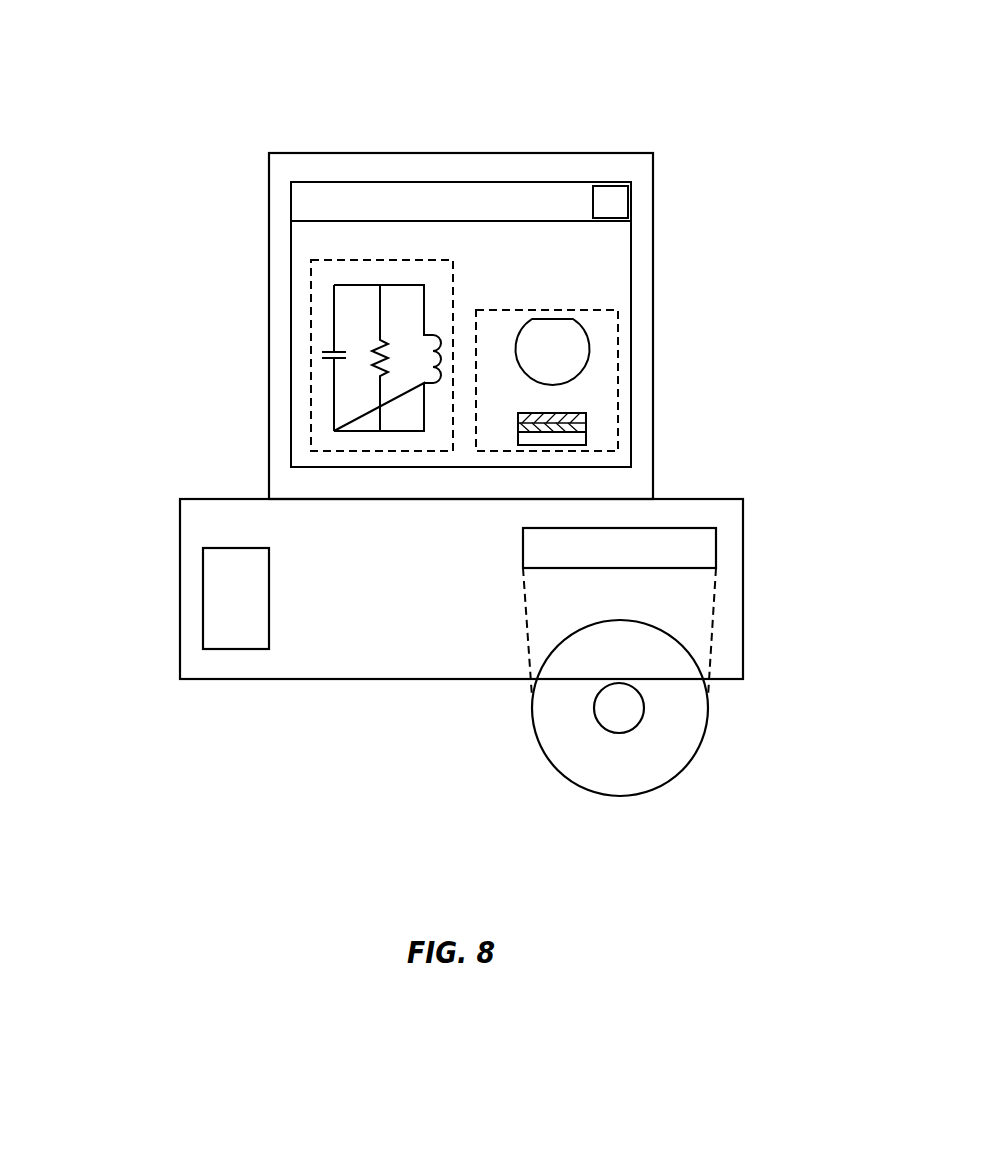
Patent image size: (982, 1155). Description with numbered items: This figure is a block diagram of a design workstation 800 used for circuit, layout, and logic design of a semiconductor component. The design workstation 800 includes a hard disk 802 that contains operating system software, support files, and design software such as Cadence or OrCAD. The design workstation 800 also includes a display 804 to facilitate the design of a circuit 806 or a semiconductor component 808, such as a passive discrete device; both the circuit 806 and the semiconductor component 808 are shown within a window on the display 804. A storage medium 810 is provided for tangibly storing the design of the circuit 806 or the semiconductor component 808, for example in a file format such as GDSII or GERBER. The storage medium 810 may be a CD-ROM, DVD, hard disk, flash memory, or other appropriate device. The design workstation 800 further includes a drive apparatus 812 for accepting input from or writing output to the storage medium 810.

The design workstation 800 is at (475, 427).
The hard disk 802 is at (269, 571).
The display 804 is at (613, 152).
The circuit 806 is at (453, 273).
The semiconductor component 808 is at (539, 308).
The storage medium 810 is at (617, 795).
The drive apparatus 812 is at (704, 528).